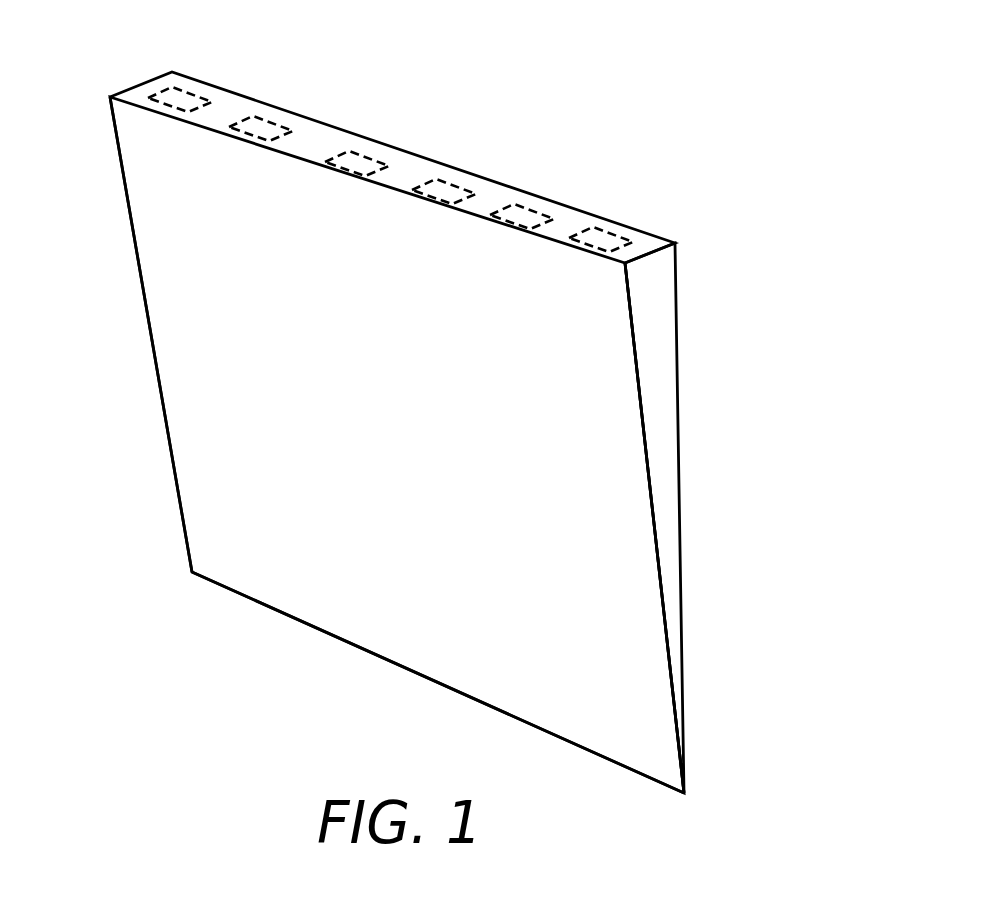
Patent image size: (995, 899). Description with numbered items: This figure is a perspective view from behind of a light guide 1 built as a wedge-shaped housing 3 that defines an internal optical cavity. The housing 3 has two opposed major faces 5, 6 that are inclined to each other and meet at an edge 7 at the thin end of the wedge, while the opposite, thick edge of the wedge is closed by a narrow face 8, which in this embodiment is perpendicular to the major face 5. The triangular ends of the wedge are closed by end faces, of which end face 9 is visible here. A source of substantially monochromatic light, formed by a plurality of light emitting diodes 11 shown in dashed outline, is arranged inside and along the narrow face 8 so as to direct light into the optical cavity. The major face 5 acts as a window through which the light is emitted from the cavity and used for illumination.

The light guide 1 is at (772, 332).
The wedge-shaped housing 3 is at (635, 535).
The major face 5 is at (680, 279).
The major face 6 is at (387, 422).
The edge 7 is at (648, 780).
The narrow face 8 is at (133, 93).
The end face 9 is at (669, 412).
The light emitting diodes 11 is at (277, 127).